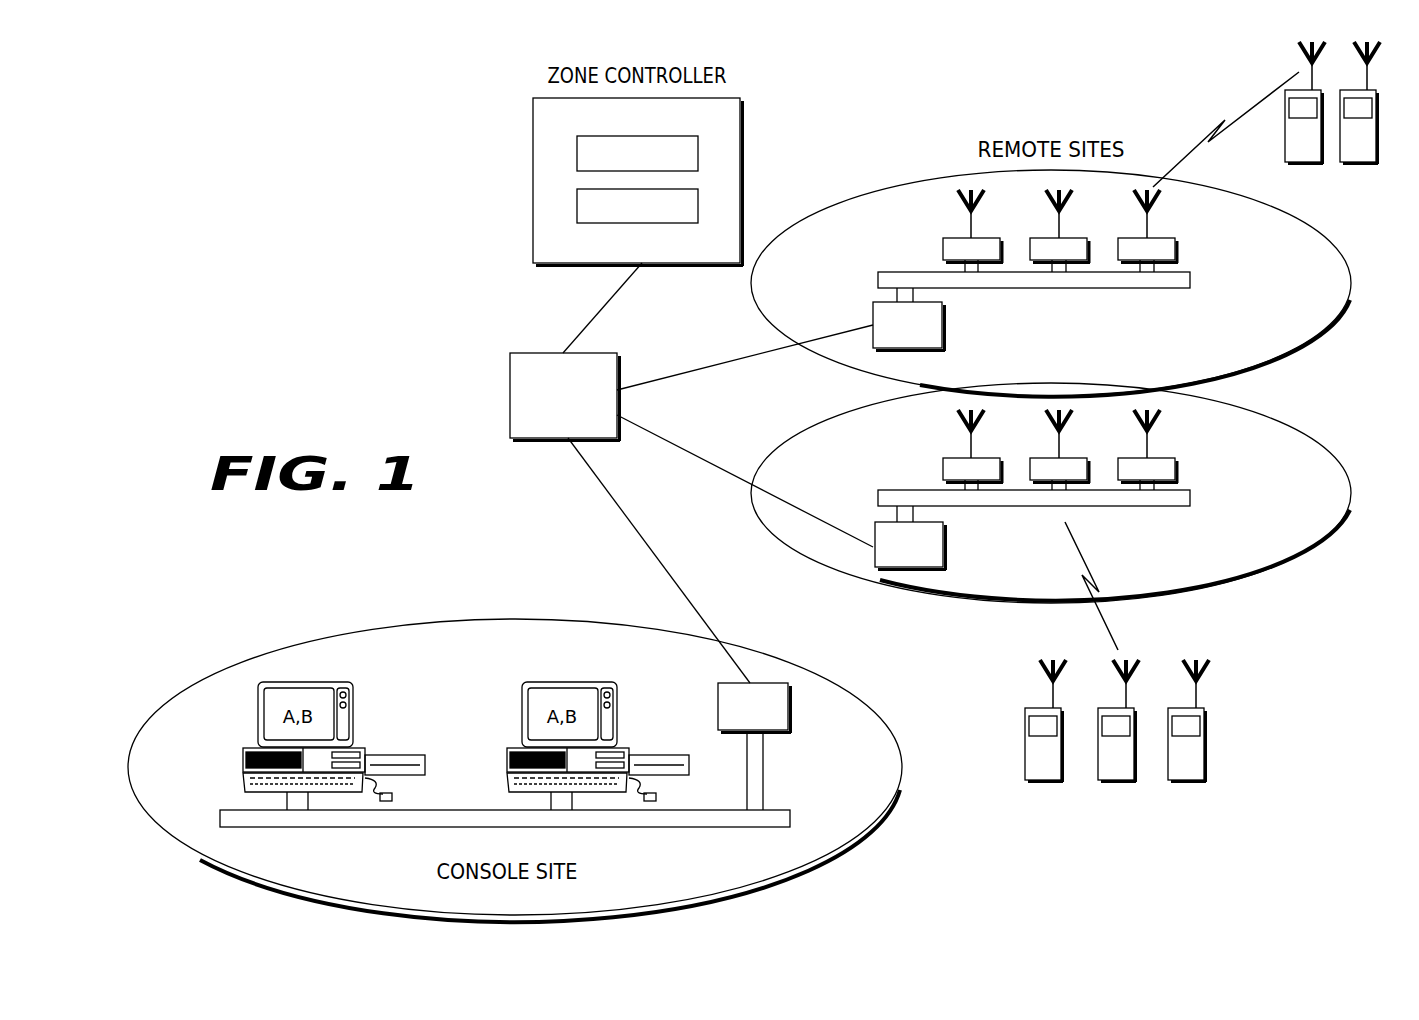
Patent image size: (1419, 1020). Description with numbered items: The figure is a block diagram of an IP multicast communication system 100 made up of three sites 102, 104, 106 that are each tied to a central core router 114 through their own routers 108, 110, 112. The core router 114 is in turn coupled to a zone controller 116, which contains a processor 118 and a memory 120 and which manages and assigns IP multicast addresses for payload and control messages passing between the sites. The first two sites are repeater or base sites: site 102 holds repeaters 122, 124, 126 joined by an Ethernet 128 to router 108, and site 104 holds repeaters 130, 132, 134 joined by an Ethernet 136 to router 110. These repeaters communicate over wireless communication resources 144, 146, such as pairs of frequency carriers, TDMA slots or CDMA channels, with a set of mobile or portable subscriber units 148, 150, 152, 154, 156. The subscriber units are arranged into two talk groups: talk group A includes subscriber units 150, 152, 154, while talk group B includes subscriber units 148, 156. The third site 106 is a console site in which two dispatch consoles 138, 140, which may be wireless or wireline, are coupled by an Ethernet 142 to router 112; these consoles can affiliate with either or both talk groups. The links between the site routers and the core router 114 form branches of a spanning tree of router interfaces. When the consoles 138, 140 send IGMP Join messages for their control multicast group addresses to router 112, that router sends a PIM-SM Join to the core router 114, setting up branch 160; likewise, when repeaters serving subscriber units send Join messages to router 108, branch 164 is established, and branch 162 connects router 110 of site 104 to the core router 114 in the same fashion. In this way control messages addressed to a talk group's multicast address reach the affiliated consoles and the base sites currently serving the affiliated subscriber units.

The IP multicast communication system 100 is at (950, 794).
The site 102 is at (1286, 360).
The site 104 is at (1286, 570).
The site 106 is at (868, 828).
The router 108 is at (942, 350).
The router 110 is at (944, 568).
The router 112 is at (789, 730).
The core router 114 is at (509, 362).
The zone controller 116 is at (533, 141).
The processor 118 is at (700, 156).
The memory 120 is at (700, 208).
The repeater 122 is at (942, 246).
The repeater 124 is at (1029, 246).
The repeater 126 is at (1117, 246).
The Ethernet 128 is at (1190, 291).
The repeater 130 is at (942, 467).
The repeater 132 is at (1029, 467).
The repeater 134 is at (1117, 467).
The Ethernet 136 is at (1190, 509).
The dispatch console 138 is at (356, 692).
The dispatch console 140 is at (620, 692).
The Ethernet 142 is at (352, 833).
The wireless communication resource 144 is at (1205, 137).
The wireless communication resource 146 is at (1112, 636).
The subscriber unit 148 is at (1321, 162).
The subscriber unit 150 is at (1377, 162).
The subscriber unit 152 is at (1062, 780).
The subscriber unit 154 is at (1135, 780).
The subscriber unit 156 is at (1205, 780).
The branch 160 is at (623, 520).
The branch 162 is at (692, 453).
The branch 164 is at (682, 373).